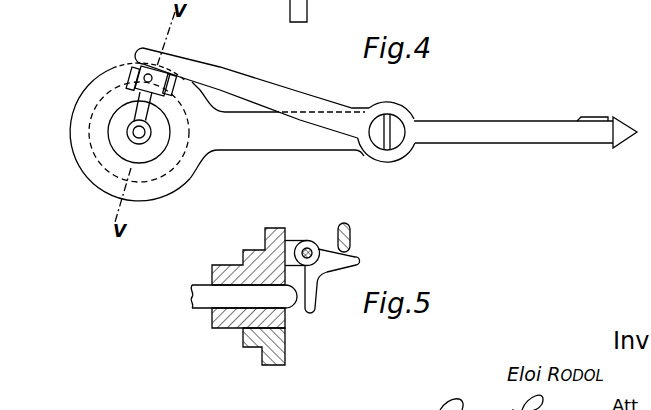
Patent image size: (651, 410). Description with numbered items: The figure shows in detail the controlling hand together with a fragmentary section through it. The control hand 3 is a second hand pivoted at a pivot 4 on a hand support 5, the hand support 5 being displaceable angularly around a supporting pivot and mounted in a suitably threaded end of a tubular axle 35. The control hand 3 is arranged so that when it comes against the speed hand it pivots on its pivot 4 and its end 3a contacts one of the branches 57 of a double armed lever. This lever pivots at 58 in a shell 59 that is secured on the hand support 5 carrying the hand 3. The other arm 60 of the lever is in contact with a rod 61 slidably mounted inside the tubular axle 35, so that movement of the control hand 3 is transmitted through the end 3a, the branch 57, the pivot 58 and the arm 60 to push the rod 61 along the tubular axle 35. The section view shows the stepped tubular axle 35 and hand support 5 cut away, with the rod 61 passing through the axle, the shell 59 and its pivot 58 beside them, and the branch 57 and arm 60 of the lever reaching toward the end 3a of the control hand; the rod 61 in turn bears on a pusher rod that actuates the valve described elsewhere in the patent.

In FIG. 4, the control hand 3 is at (555, 133).
In FIG. 4, the end of control hand 3a is at (146, 52).
In FIG. 5, the end of control hand 3a is at (351, 237).
In FIG. 4, the pivot 4 is at (398, 135).
In FIG. 4, the hand support 5 is at (263, 127).
In FIG. 5, the hand support 5 is at (257, 343).
In FIG. 4, the tubular axle 35 is at (120, 142).
In FIG. 5, the tubular axle 35 is at (232, 330).
In FIG. 4, the branch of double armed lever 57 is at (141, 62).
In FIG. 5, the branch of double armed lever 57 is at (358, 261).
In FIG. 4, the lever pivot 58 is at (128, 73).
In FIG. 5, the lever pivot 58 is at (310, 249).
In FIG. 4, the shell 59 is at (133, 85).
In FIG. 5, the shell 59 is at (296, 243).
In FIG. 4, the other arm of lever 60 is at (143, 136).
In FIG. 5, the other arm of lever 60 is at (310, 313).
In FIG. 4, the rod 61 is at (138, 138).
In FIG. 5, the rod 61 is at (205, 310).